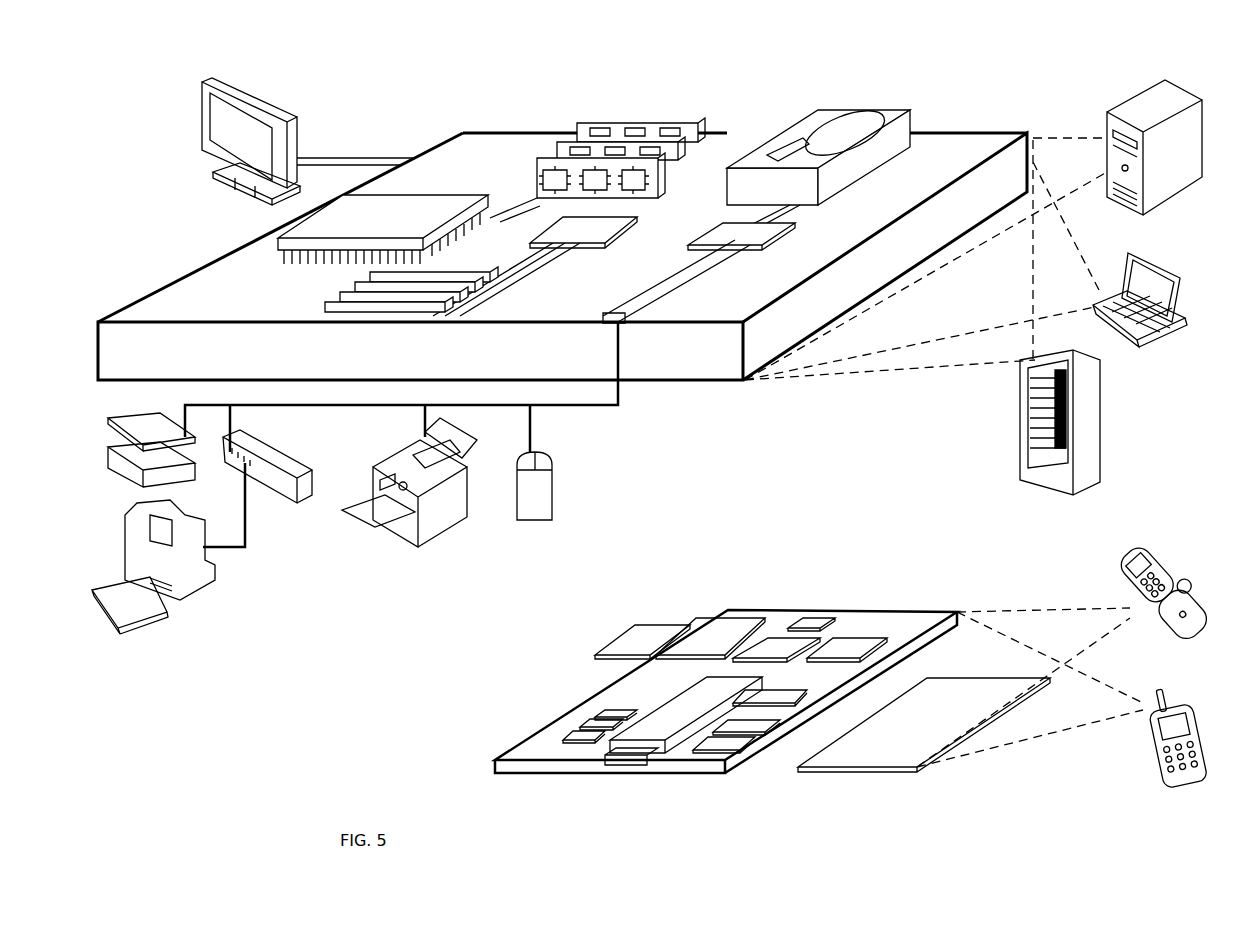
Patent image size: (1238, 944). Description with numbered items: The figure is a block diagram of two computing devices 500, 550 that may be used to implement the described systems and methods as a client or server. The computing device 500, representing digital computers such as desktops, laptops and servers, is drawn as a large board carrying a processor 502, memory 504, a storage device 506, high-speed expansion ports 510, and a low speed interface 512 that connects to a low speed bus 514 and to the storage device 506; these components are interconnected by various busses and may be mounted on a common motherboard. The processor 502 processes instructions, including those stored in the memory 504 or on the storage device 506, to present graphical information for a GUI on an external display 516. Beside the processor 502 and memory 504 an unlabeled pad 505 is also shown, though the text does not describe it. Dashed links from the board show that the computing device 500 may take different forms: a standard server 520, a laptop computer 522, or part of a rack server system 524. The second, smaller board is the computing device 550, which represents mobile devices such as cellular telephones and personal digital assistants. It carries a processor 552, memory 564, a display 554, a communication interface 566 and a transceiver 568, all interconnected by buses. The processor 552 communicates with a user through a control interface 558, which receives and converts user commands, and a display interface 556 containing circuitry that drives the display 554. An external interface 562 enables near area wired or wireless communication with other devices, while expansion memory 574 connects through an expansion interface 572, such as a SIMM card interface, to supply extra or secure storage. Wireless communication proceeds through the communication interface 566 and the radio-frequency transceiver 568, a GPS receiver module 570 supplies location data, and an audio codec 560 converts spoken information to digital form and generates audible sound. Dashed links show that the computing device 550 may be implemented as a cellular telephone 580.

The computing device 500 is at (402, 107).
The processor 502 is at (277, 247).
The memory 504 is at (580, 123).
The chipset pad 505 is at (567, 218).
The storage device 506 is at (812, 113).
The high-speed expansion ports 510 is at (360, 298).
The low speed interface 512 is at (742, 232).
The low speed bus 514 is at (622, 322).
The display 516 is at (203, 87).
The standard server 520 is at (1107, 118).
The laptop computer 522 is at (1128, 254).
The rack server system 524 is at (1020, 443).
The computing device 550 is at (713, 591).
The processor 552 is at (652, 770).
The display 554 is at (920, 766).
The display interface 556 is at (733, 765).
The control interface 558 is at (765, 733).
The audio codec 560 is at (785, 706).
The external interface 562 is at (628, 770).
The memory 564 is at (580, 727).
The communication interface 566 is at (768, 643).
The transceiver 568 is at (848, 648).
The GPS receiver module 570 is at (817, 613).
The expansion interface 572 is at (697, 621).
The expansion memory 574 is at (640, 625).
The cellular telephone 580 is at (1173, 555).